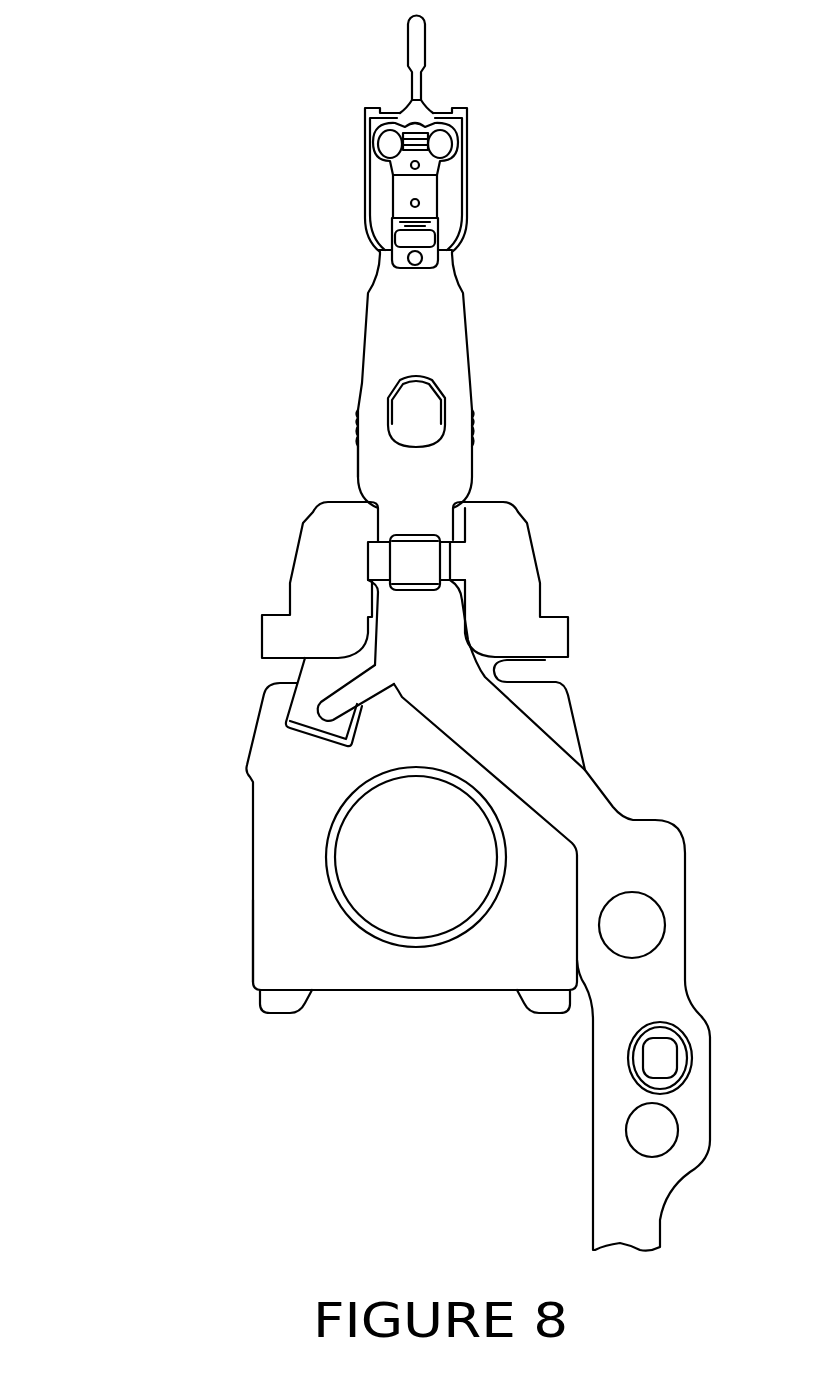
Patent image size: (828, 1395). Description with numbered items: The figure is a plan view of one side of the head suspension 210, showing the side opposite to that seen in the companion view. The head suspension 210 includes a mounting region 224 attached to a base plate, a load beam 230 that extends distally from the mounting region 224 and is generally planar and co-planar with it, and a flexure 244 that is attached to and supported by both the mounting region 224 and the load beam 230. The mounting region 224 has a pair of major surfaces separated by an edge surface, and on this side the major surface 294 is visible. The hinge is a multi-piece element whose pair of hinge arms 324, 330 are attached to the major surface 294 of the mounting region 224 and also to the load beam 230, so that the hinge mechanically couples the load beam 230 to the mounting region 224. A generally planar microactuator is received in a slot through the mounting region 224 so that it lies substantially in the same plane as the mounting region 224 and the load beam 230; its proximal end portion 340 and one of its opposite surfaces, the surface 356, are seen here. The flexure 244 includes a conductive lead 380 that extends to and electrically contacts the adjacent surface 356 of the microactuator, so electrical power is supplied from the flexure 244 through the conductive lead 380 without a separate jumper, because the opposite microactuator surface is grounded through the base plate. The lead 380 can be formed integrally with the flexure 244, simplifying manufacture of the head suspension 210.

The head suspension 210 is at (133, 1157).
The mounting region 224 is at (455, 998).
The load beam 230 is at (348, 478).
The flexure 244 is at (493, 322).
The major surface 294 is at (273, 937).
The hinge arm 324 is at (535, 552).
The hinge arm 330 is at (300, 545).
The proximal end portion 340 is at (302, 718).
The surface 356 is at (305, 662).
The conductive lead 380 is at (348, 690).